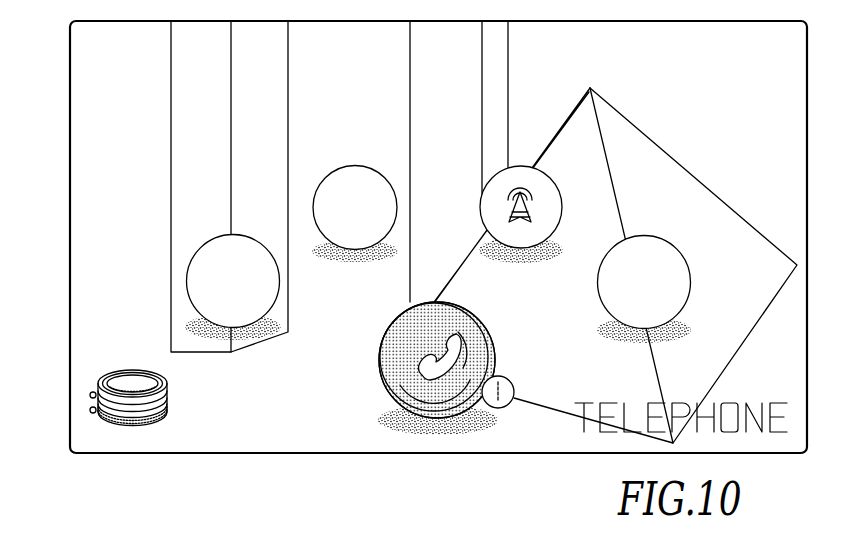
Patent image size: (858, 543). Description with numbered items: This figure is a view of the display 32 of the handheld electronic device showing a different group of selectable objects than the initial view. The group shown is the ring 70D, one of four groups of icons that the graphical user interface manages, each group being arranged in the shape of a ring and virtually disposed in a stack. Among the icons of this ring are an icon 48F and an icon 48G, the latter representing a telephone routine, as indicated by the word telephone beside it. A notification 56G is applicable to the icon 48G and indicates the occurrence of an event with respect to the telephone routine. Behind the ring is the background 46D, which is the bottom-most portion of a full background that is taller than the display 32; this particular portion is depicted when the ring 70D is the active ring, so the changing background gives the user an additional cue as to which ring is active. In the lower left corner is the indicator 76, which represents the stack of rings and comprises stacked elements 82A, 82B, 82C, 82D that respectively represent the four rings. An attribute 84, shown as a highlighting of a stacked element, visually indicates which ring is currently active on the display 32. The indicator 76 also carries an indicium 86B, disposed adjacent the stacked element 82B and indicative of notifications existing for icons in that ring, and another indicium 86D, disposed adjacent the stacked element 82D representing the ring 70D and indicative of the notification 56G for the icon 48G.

The display 32 is at (70, 128).
The background 46D is at (86, 62).
The antenna graphic element 48F is at (545, 177).
The icon 48G is at (481, 320).
The notification 56G is at (509, 379).
The ring 70D is at (600, 193).
The indicator 76 is at (122, 427).
The stacked element 82A is at (98, 382).
The stacked element 82B is at (132, 413).
The stacked element 82C is at (162, 399).
The stacked element 82D is at (166, 418).
The attribute 84 is at (110, 423).
The indicium 86B is at (90, 394).
The indicium 86D is at (90, 410).